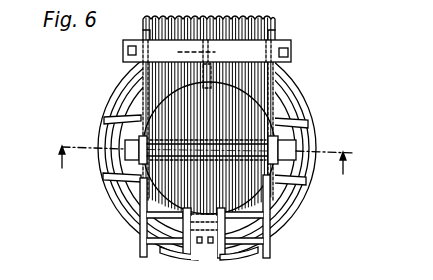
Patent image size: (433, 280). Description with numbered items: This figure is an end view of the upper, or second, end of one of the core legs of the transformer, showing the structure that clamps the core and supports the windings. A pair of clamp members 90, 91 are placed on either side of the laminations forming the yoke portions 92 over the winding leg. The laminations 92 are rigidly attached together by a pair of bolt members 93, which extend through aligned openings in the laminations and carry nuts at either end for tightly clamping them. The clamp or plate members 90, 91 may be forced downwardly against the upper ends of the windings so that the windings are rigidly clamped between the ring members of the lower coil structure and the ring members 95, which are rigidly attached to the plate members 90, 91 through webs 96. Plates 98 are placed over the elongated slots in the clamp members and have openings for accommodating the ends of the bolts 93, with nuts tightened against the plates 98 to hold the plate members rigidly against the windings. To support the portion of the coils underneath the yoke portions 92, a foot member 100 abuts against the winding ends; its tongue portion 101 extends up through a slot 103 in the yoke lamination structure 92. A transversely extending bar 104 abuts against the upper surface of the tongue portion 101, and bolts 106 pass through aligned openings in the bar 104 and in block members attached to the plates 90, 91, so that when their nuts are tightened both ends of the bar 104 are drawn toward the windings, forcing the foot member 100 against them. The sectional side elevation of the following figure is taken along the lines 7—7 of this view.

The section lines 7— 7 is at (205, 171).
The clamp member 90 is at (140, 248).
The clamp member 91 is at (270, 254).
The yoke portion laminations 92 is at (192, 20).
The bolt member 93 is at (123, 139).
The ring member 95 is at (128, 106).
The web 96 is at (128, 113).
The plate 98 is at (280, 138).
The foot member 100 is at (205, 78).
The tongue portion 101 is at (183, 54).
The slot 103 is at (210, 15).
The bar 104 is at (290, 40).
The bolt 106 is at (130, 45).